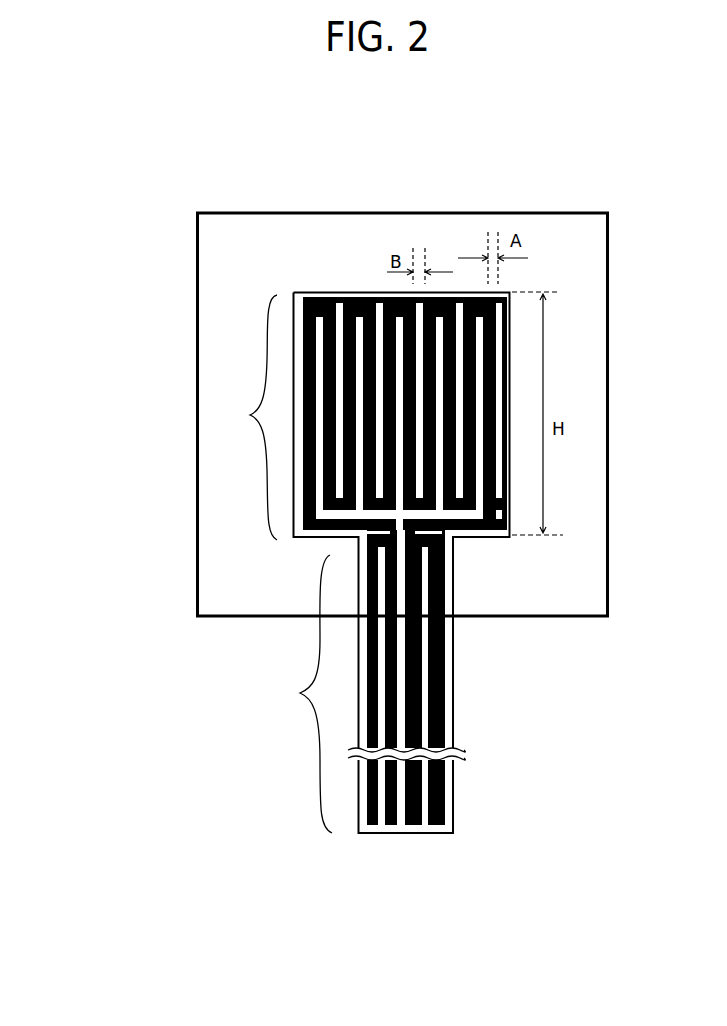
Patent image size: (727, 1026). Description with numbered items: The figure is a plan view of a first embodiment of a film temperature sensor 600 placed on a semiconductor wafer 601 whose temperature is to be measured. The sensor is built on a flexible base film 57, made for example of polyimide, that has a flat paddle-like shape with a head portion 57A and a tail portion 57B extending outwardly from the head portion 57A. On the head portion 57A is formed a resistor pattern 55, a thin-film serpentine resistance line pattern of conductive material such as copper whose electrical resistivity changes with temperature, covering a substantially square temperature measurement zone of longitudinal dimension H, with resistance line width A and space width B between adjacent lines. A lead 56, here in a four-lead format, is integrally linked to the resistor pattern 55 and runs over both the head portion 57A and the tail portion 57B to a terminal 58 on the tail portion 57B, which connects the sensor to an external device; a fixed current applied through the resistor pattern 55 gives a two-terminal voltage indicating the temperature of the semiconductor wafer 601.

The resistor pattern 55 is at (344, 297).
The lead 56 is at (443, 687).
The base film 57 is at (510, 382).
The head portion 57A is at (250, 415).
The tail portion 57B is at (300, 693).
The terminal 58 is at (453, 820).
The film temperature sensor 600 is at (236, 351).
The semiconductor wafer 601 is at (424, 210).